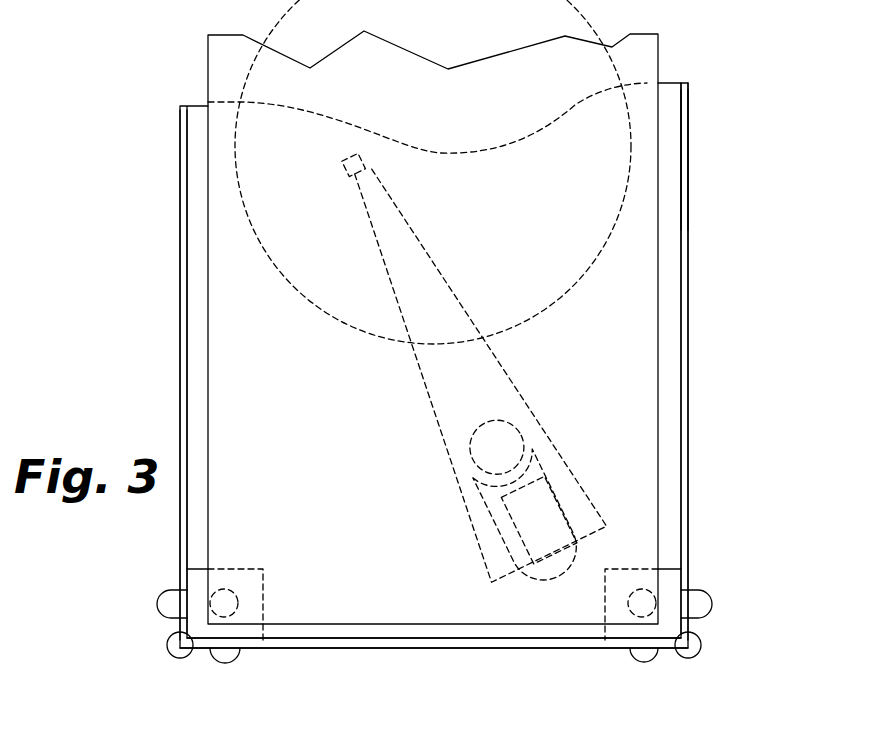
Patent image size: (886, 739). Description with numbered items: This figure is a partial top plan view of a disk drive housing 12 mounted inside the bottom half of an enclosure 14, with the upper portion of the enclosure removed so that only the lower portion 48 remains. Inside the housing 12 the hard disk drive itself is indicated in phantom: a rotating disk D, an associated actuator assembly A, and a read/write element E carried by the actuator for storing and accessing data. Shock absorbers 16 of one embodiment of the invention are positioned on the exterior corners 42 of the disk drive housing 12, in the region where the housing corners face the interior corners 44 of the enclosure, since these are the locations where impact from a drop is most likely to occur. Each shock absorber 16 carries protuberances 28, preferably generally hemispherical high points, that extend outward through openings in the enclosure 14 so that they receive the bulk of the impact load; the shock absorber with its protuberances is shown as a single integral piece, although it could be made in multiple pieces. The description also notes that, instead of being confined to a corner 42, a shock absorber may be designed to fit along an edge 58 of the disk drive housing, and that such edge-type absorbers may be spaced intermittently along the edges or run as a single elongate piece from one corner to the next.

The disk drive housing 12 is at (238, 321).
The enclosure 14 is at (683, 337).
The shock absorber 16 is at (200, 590).
The protuberance 28 is at (168, 603).
The exterior corner 42 is at (232, 610).
The interior corner 44 is at (197, 622).
The lower portion 48 is at (689, 217).
The edge 58 is at (208, 355).
The actuator assembly A is at (423, 278).
The rotating disk D is at (582, 182).
The read/write element E is at (352, 172).